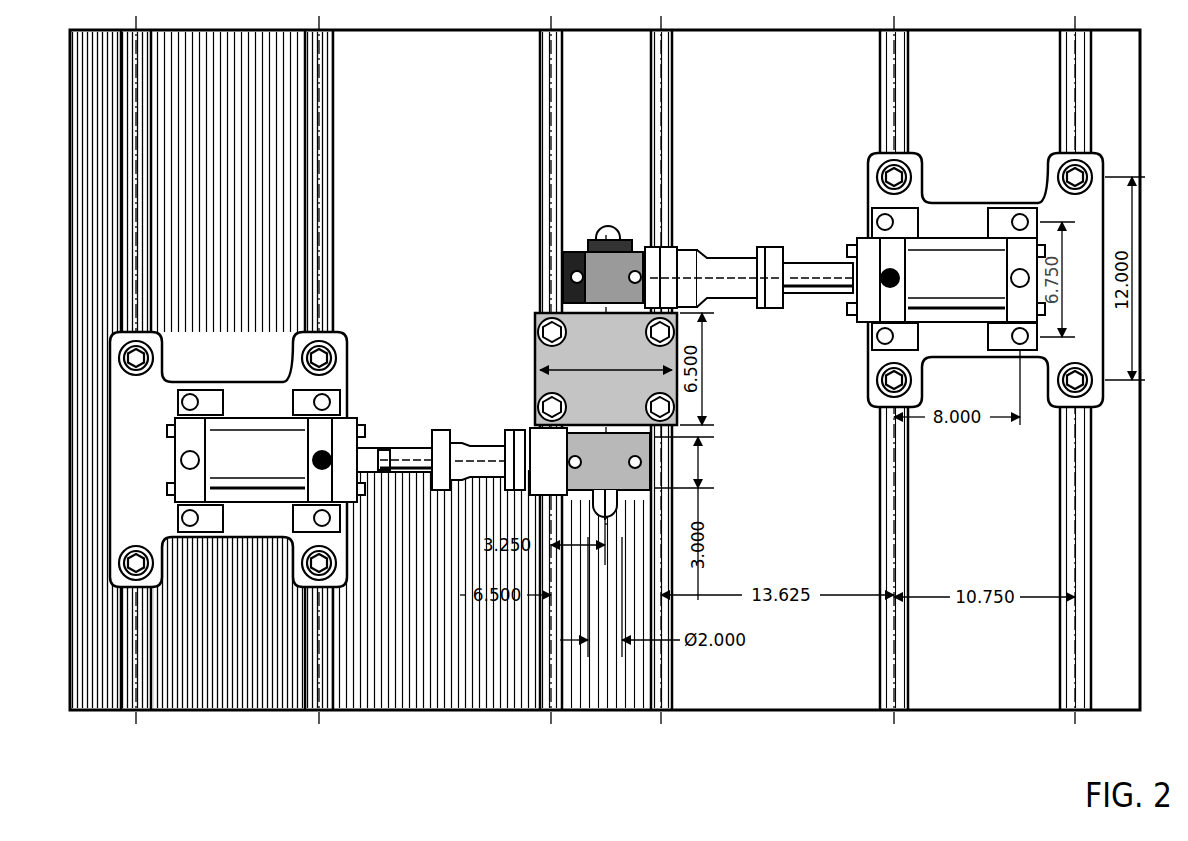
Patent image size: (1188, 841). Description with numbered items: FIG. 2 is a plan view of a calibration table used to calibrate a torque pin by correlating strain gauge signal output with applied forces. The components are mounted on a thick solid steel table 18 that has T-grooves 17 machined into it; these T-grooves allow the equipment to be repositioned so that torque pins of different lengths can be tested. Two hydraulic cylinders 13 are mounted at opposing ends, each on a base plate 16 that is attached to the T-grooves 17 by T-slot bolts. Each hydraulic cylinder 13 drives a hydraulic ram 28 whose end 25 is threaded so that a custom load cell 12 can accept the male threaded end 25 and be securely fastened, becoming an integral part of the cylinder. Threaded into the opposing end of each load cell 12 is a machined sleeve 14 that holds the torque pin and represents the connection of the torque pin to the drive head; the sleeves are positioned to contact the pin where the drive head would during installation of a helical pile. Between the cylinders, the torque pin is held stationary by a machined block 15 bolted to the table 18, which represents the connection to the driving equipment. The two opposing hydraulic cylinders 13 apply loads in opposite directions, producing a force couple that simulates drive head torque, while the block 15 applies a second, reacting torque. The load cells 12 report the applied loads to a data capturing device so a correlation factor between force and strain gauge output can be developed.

The load cell 12 is at (493, 452).
The hydraulic cylinder 13 is at (392, 458).
The sleeve 14 is at (635, 468).
The block 15 is at (577, 355).
The base plate 16 is at (268, 398).
The T-grooves 17 is at (330, 148).
The table 18 is at (793, 172).
The end of the hydraulic ram 25 is at (420, 450).
The hydraulic ram 28 is at (373, 487).